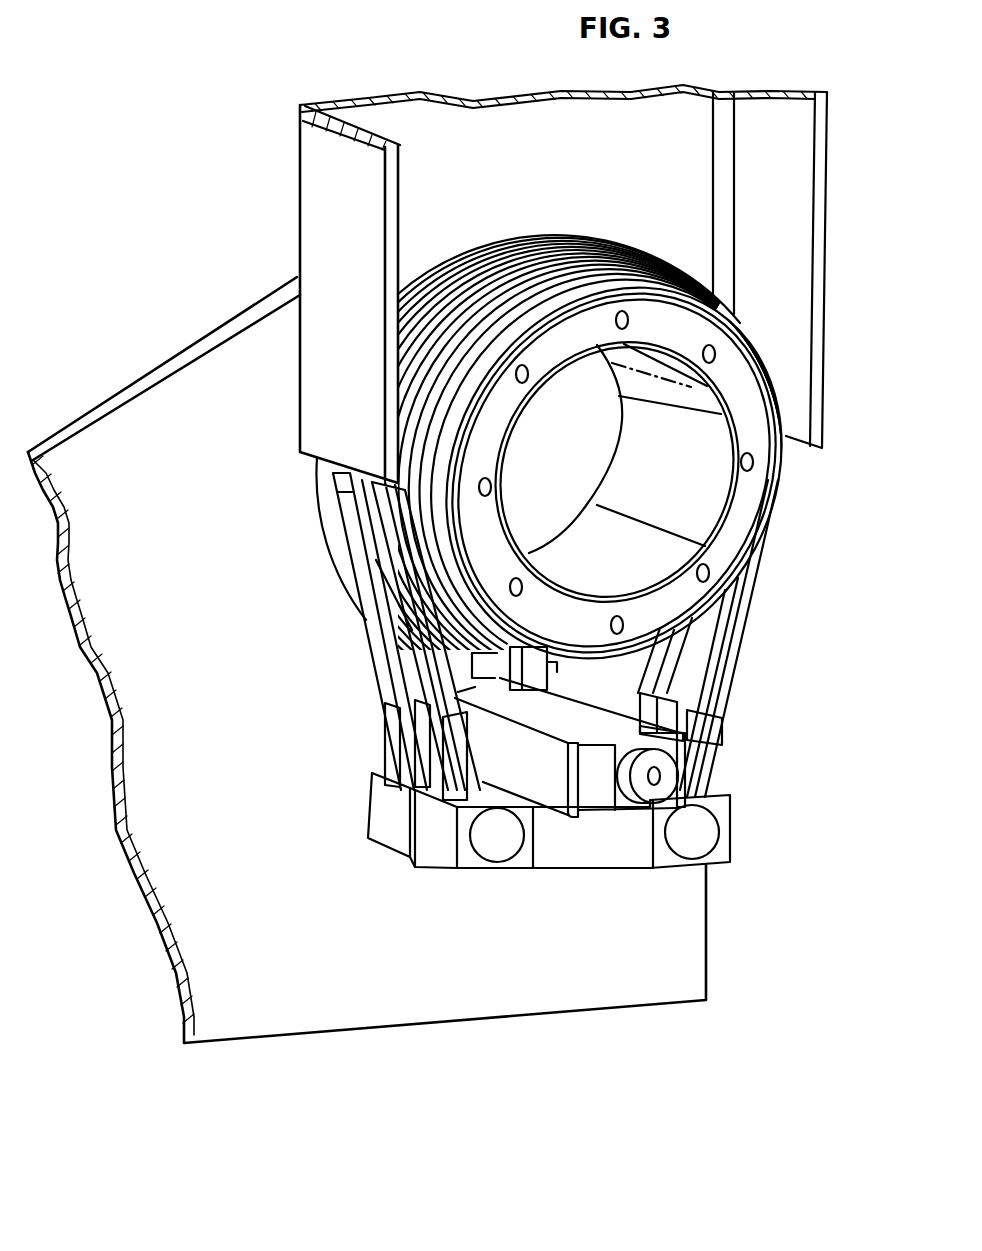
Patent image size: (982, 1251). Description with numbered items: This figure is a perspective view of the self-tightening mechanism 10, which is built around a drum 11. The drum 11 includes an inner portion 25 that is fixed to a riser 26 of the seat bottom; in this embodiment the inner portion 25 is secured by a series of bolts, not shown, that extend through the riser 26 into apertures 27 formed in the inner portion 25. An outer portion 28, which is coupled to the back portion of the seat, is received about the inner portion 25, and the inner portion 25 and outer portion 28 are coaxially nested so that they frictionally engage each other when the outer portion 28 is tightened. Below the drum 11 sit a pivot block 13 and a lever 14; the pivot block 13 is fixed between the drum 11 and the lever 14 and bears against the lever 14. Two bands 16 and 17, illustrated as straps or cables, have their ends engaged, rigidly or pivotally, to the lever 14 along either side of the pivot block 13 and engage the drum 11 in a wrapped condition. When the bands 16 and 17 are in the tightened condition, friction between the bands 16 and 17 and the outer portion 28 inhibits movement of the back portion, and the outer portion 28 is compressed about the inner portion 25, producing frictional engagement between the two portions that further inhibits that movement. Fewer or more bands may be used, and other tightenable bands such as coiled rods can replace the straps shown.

The self-tightening mechanism 10 is at (299, 641).
The drum 11 is at (680, 332).
The pivot block 13 is at (533, 772).
The lever 14 is at (577, 853).
The band 16 is at (427, 667).
The band 17 is at (378, 635).
The inner portion 25 is at (747, 510).
The riser 26 is at (183, 395).
The apertures 27 is at (620, 331).
The outer portion 28 is at (460, 519).